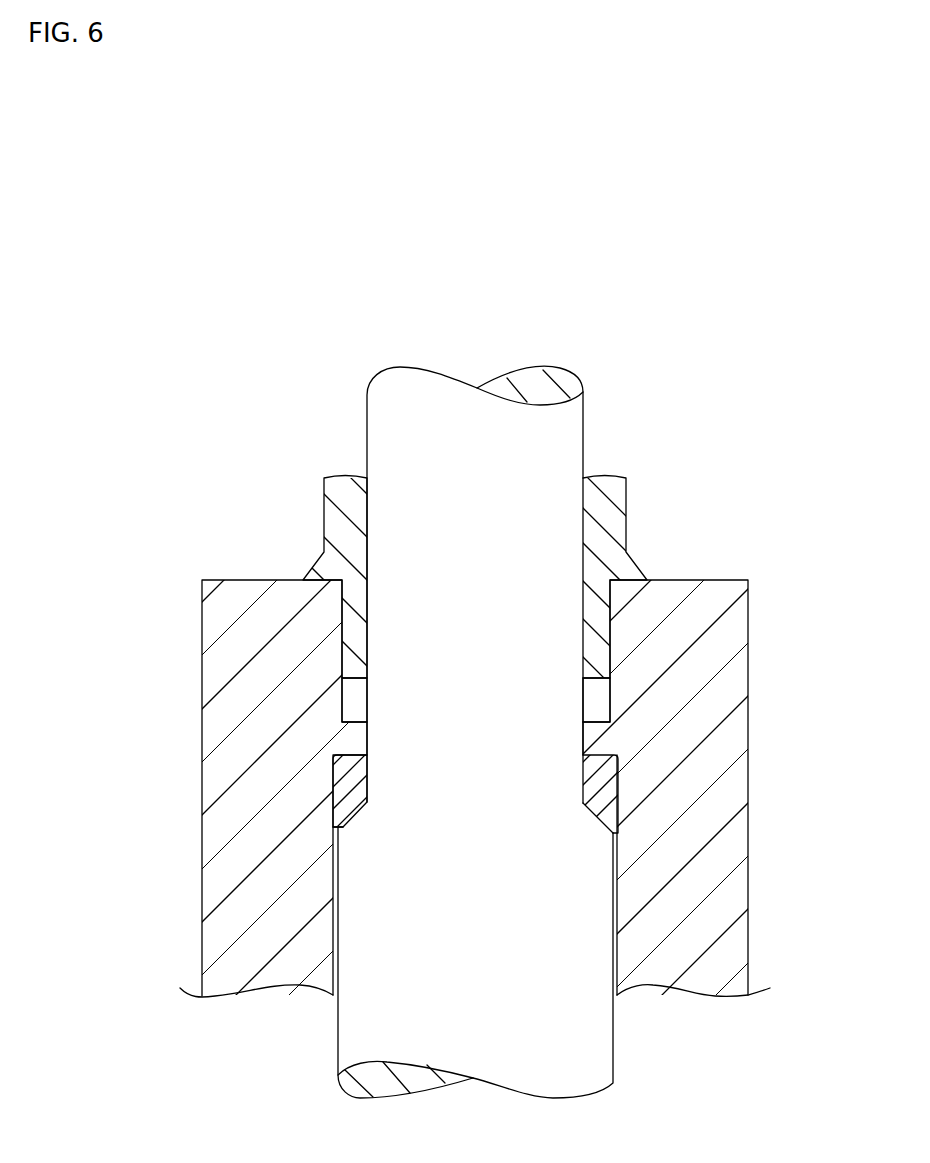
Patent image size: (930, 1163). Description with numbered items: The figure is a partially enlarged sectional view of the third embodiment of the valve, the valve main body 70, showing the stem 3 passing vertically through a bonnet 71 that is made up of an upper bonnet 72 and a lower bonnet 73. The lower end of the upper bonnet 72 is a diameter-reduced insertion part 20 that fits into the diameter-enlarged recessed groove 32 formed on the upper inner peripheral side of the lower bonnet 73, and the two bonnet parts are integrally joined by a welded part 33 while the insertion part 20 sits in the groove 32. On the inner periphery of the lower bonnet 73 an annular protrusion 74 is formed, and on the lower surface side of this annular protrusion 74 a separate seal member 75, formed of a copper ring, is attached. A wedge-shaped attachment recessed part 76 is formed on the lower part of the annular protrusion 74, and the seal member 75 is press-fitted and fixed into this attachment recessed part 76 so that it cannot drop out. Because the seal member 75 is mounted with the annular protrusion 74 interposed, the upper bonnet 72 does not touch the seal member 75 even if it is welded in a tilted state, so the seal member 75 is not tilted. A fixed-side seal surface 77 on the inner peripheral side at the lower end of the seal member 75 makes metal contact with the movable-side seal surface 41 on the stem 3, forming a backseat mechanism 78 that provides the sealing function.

The stem 3 is at (500, 456).
The insertion part 20 is at (588, 570).
The diameter-enlarged recessed groove 32 is at (348, 696).
The welded part 33 is at (628, 567).
The movable-side seal surface 41 is at (618, 812).
The valve main body 70 is at (465, 700).
The bonnet 71 is at (465, 700).
The upper bonnet 72 is at (337, 523).
The lower bonnet 73 is at (465, 700).
The annular protrusion 74 is at (594, 732).
The seal member 75 is at (333, 783).
The attachment recessed part 76 is at (606, 782).
The fixed-side seal surface 77 is at (352, 818).
The backseat mechanism 78 is at (599, 822).